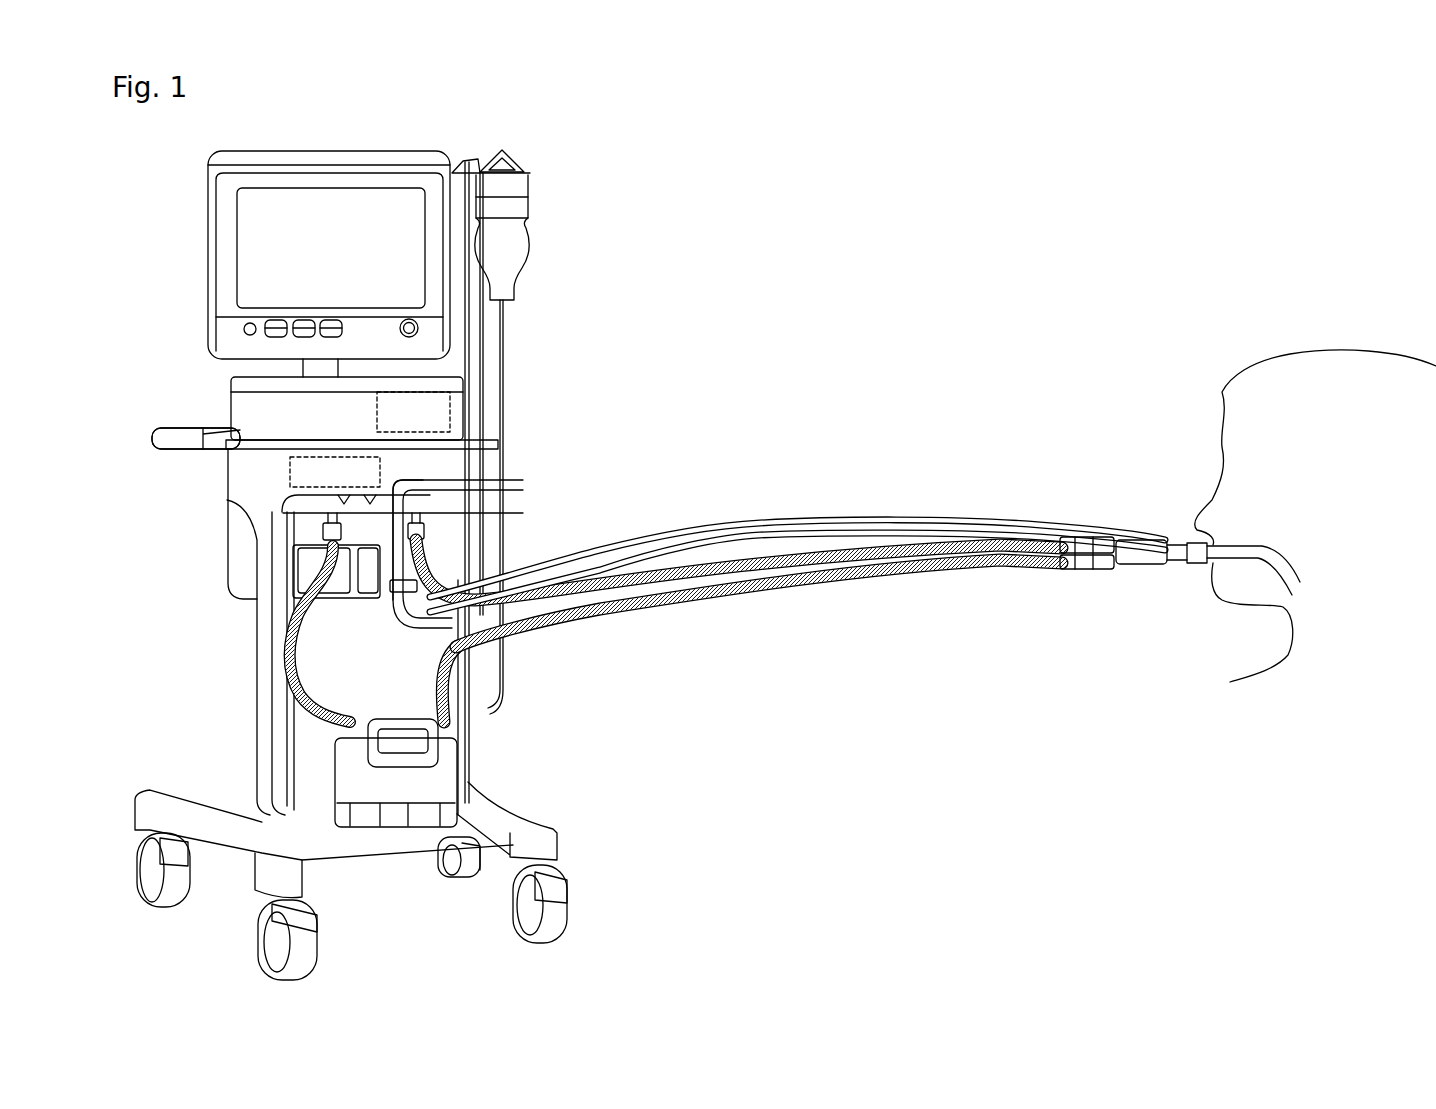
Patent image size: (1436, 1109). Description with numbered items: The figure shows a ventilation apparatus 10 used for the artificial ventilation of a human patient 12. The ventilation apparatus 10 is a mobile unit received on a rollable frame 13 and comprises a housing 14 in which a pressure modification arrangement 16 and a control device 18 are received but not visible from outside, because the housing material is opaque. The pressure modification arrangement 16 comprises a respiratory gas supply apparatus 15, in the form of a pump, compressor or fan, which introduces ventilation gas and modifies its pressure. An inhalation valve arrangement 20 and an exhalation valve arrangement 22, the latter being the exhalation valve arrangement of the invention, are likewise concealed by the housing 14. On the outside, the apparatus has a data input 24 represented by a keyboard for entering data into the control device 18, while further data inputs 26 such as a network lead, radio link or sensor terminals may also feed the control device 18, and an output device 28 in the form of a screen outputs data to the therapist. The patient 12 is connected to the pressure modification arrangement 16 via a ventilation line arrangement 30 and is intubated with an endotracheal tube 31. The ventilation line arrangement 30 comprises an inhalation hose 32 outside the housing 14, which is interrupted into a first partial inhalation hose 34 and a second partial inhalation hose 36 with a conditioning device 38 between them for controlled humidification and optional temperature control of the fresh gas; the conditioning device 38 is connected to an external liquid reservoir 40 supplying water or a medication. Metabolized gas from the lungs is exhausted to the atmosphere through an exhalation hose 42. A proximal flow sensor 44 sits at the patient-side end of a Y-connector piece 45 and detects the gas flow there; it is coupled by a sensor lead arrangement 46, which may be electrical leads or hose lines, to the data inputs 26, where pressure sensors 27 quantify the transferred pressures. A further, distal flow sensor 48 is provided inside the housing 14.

The ventilation apparatus 10 is at (662, 290).
The patient 12 is at (1253, 393).
The rollable frame 13 is at (545, 850).
The housing 14 is at (180, 394).
The respiratory gas supply apparatus 15 is at (250, 469).
The pressure modification arrangement 16 is at (196, 438).
The control device 18 is at (442, 406).
The inhalation valve arrangement 20 is at (330, 506).
The exhalation valve arrangement 22 is at (455, 514).
The data input 24 is at (240, 329).
The data inputs 26 is at (523, 480).
The pressure sensors 27 is at (408, 540).
The output device 28 is at (280, 237).
The ventilation line arrangement 30 is at (787, 617).
The endotracheal tube 31 is at (1257, 545).
The inhalation hose 32 is at (482, 696).
The first partial inhalation hose 34 is at (280, 657).
The second partial inhalation hose 36 is at (562, 632).
The conditioning device 38 is at (403, 798).
The external liquid reservoir 40 is at (516, 188).
The exhalation hose 42 is at (682, 616).
The proximal flow sensor 44 is at (1170, 532).
The Y-connector piece 45 is at (1122, 568).
The sensor lead arrangement 46 is at (765, 508).
The distal flow sensor 48 is at (335, 472).